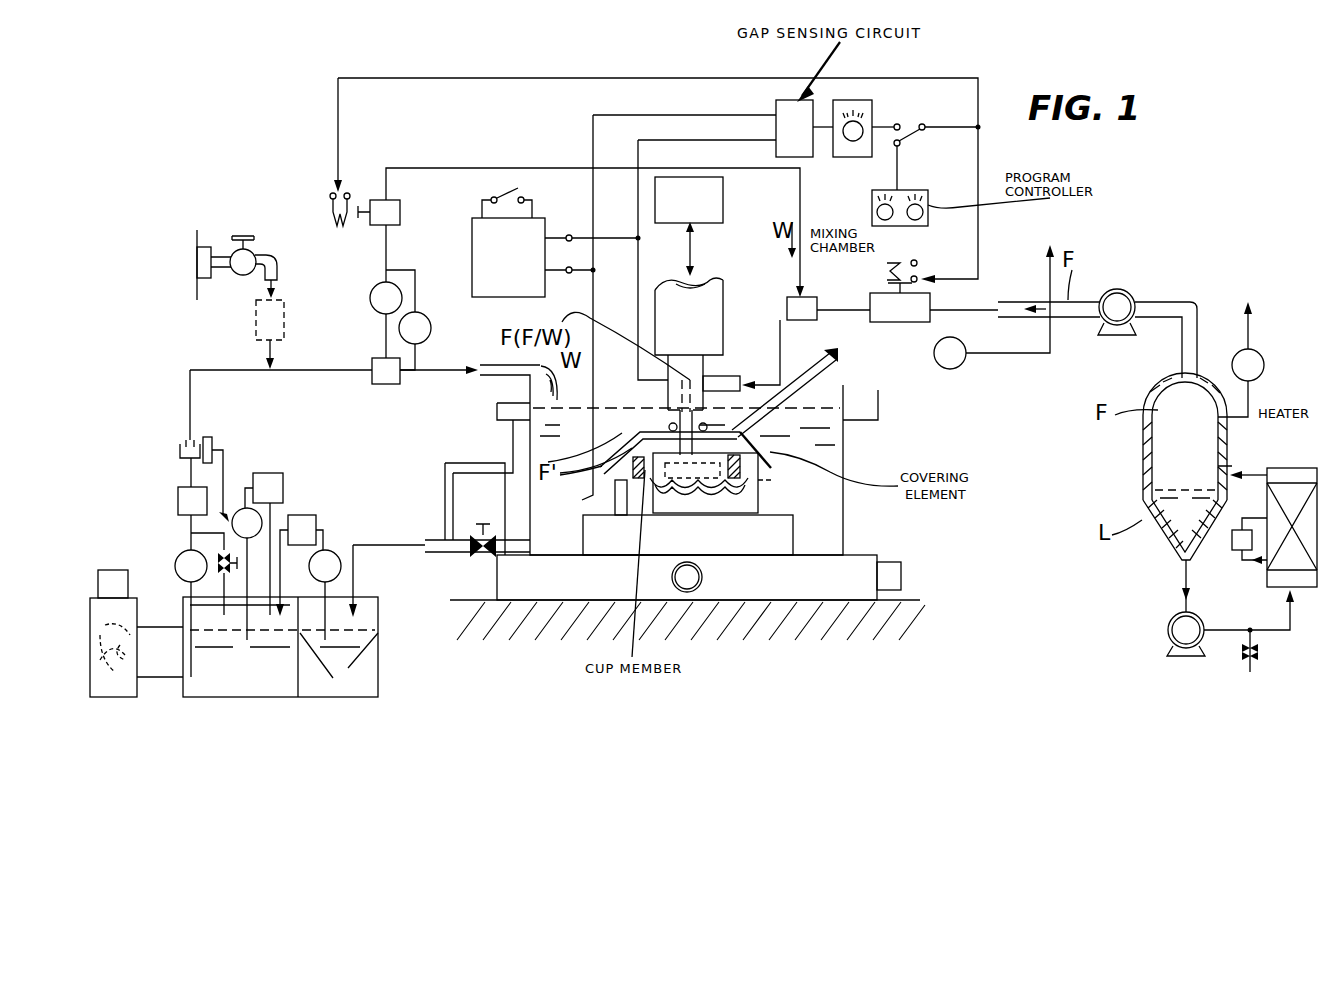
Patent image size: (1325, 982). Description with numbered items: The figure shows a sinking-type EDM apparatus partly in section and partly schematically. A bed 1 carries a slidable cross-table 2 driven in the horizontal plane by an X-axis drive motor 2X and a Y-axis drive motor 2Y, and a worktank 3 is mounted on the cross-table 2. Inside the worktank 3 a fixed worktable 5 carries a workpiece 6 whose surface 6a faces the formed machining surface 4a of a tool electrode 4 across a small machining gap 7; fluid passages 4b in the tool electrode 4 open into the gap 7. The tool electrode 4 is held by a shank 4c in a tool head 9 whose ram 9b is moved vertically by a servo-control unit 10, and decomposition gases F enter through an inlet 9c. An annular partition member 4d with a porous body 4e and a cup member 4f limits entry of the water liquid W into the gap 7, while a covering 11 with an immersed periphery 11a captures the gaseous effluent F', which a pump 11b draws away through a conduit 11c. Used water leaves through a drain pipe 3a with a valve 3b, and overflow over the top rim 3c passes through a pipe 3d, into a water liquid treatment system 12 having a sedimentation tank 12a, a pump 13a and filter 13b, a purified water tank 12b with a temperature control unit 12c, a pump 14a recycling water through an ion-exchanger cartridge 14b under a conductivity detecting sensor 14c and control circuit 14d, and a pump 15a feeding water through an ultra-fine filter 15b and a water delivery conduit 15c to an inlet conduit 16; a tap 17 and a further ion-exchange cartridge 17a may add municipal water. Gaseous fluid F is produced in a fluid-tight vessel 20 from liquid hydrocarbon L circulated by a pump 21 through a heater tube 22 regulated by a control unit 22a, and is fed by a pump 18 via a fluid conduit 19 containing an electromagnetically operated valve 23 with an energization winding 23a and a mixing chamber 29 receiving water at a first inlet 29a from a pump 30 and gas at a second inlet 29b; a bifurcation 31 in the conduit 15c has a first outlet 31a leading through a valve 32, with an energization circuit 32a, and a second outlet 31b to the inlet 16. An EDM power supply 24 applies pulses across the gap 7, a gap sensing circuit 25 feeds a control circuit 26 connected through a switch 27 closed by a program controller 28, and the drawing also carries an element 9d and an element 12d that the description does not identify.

The bed 1 is at (910, 605).
The cross-table 2 is at (858, 574).
The X-axis drive motor 2X is at (698, 588).
The Y-axis drive motor 2Y is at (905, 575).
The worktank 3 is at (845, 440).
The drain pipe 3a is at (432, 560).
The valve 3b is at (478, 560).
The top rim 3c is at (497, 403).
The pipe 3d is at (452, 463).
The tool electrode 4 is at (762, 445).
The machining surface 4a is at (725, 500).
The fluid passages 4b is at (762, 480).
The shank 4c is at (742, 430).
The partition member 4d is at (625, 515).
The porous body 4e is at (642, 478).
The cup member 4f is at (612, 478).
The worktable 5 is at (795, 540).
The workpiece 6 is at (760, 510).
The surface of the workpiece 6a is at (690, 500).
The machining gap 7 is at (742, 500).
The tool head 9 is at (725, 295).
The ram 9b is at (716, 290).
The inlet 9c is at (738, 376).
The tool holder rod 9d is at (706, 380).
The servo-control unit 10 is at (690, 177).
The covering 11 is at (600, 445).
The periphery of the covering 11a is at (598, 462).
The pump 11b is at (953, 370).
The conduit 11c is at (794, 383).
The water liquid treatment system 12 is at (334, 487).
The sedimentation tank 12a is at (373, 697).
The purified water tank 12b is at (255, 697).
The temperature control unit 12c is at (125, 697).
The partition 12d is at (300, 690).
The pump 13a is at (338, 556).
The filter 13b is at (316, 522).
The pump 14a is at (241, 508).
The ion-exchanger cartridge 14b is at (283, 478).
The conductivity detecting sensor 14c is at (180, 447).
The control circuit 14d is at (212, 445).
The pump 15a is at (177, 560).
The ultra-fine filter 15b is at (178, 500).
The water delivery conduit 15c is at (315, 370).
The inlet conduit 16 is at (482, 363).
The tap 17 is at (218, 247).
The ion-exchange cartridge 17a is at (285, 303).
The pump 18 is at (1126, 292).
The fluid conduit 19 is at (1012, 302).
The fluid-tight vessel 20 is at (1150, 440).
The pump 21 is at (1168, 625).
The heater tube 22 is at (1290, 478).
The control unit 22a is at (1232, 545).
The electromagnetically operated valve 23 is at (930, 318).
The energization winding 23a is at (920, 265).
The EDM power supply 24 is at (472, 240).
The gap sensing circuit 25 is at (776, 110).
The control circuit 26 is at (872, 110).
The switch 27 is at (905, 130).
The program controller 28 is at (872, 205).
The mixing chamber 29 is at (817, 300).
The first inlet 29a is at (787, 300).
The second inlet 29b is at (838, 364).
The pump 30 is at (378, 288).
The bifurcation 31 is at (372, 383).
The first outlet 31a is at (375, 357).
The second outlet 31b is at (400, 382).
The valve 32 is at (401, 210).
The energization circuit 32a is at (328, 203).